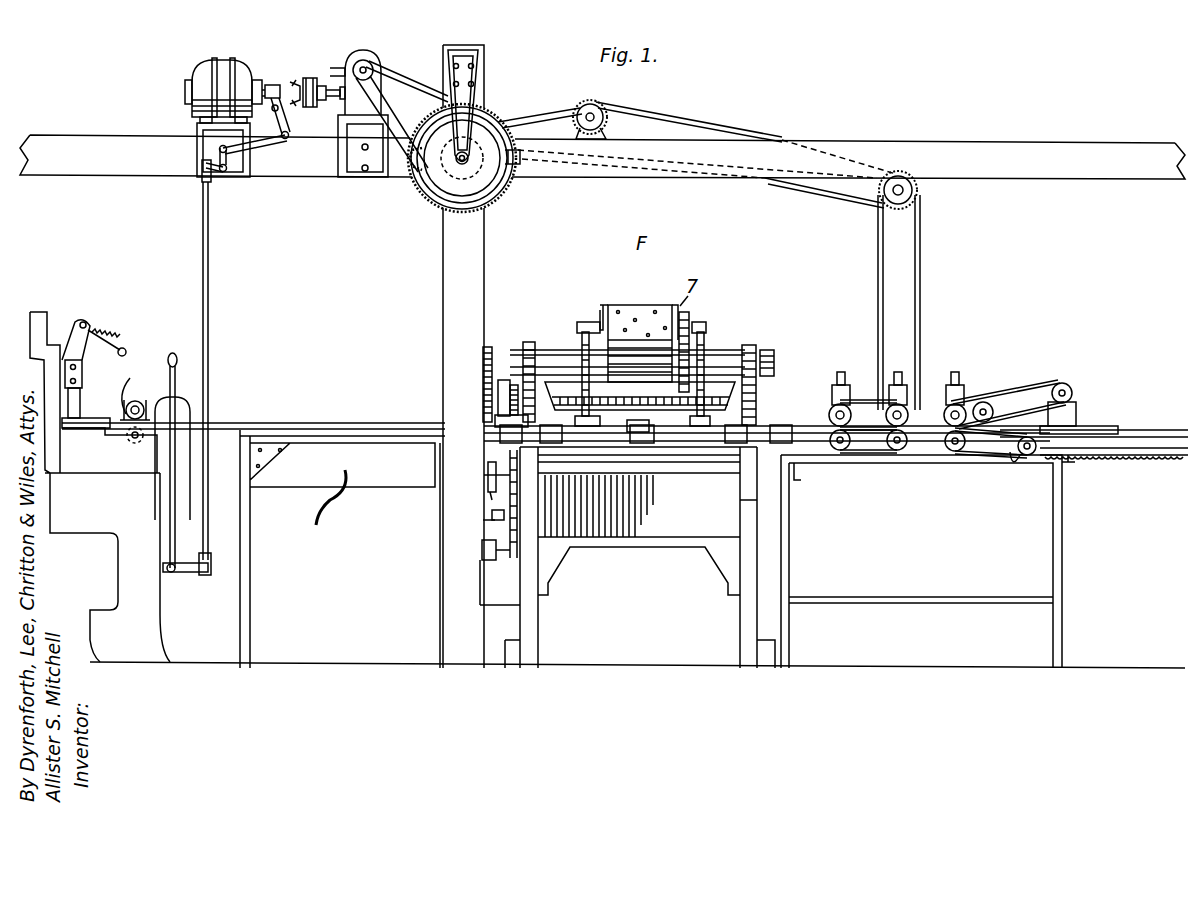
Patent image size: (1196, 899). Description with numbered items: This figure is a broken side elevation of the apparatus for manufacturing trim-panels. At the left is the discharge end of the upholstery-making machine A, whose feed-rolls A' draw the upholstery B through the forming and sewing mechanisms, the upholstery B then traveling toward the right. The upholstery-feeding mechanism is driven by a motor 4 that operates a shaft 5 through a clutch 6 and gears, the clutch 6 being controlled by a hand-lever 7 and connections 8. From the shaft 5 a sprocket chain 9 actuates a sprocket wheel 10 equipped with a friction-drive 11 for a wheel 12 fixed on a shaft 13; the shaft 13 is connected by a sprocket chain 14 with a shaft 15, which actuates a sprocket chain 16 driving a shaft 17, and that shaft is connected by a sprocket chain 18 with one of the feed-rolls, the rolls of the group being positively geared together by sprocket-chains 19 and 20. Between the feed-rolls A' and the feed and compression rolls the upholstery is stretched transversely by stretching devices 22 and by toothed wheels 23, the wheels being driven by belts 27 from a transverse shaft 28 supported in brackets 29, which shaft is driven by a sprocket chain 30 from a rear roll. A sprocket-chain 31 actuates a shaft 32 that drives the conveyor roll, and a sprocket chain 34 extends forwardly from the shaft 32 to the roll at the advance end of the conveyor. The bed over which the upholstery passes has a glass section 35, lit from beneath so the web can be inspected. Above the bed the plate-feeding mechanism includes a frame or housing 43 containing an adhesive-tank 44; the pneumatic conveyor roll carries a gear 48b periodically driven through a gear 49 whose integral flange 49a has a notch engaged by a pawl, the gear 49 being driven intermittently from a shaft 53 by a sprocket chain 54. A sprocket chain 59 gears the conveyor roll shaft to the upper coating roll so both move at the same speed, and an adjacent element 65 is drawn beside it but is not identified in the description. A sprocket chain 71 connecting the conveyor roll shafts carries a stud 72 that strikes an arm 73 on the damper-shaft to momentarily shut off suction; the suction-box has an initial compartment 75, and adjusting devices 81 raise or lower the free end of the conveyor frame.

The motor 4 is at (242, 72).
The shaft 5 is at (372, 62).
The clutch 6 is at (308, 78).
The hand-lever 7 is at (178, 364).
The connections 8 is at (210, 222).
The sprocket chain 9 is at (392, 170).
The sprocket wheel 10 is at (438, 196).
The friction-drive 11 is at (492, 180).
The wheel 12 is at (480, 192).
The shaft 13 is at (448, 168).
The sprocket chain 14 is at (540, 104).
The shaft 15 is at (604, 100).
The sprocket chain 16 is at (746, 132).
The shaft 17 is at (914, 188).
The sprocket chain 18 is at (922, 252).
The sprocket-chain 19 is at (846, 400).
The sprocket-chain 20 is at (912, 456).
The stretching devices 22 is at (638, 445).
The toothed wheels 23 is at (532, 634).
The belts 27 is at (1010, 386).
The transverse shaft 28 is at (1070, 392).
The brackets 29 is at (1078, 414).
The sprocket chain 30 is at (994, 404).
The sprocket-chain 31 is at (988, 456).
The shaft 32 is at (1010, 456).
The sprocket chain 34 is at (1148, 462).
The glass section 35 is at (288, 423).
The frame or housing 43 is at (750, 572).
The adhesive-tank 44 is at (730, 520).
The gear 48b is at (488, 347).
The gear 49 is at (482, 392).
The integral flange 49a is at (503, 380).
The shaft 53 is at (500, 545).
The sprocket chain 54 is at (508, 505).
The sprocket chain 59 is at (776, 372).
The gear 65 is at (765, 347).
The sprocket chain 71 is at (690, 318).
The stud 72 is at (648, 304).
The arm 73 is at (603, 305).
The initial compartment 75 is at (760, 404).
The adjusting devices 81 is at (582, 350).
The upholstery-making machine A is at (607, 490).
The feed-rolls A' is at (104, 374).
The upholstery B is at (336, 422).